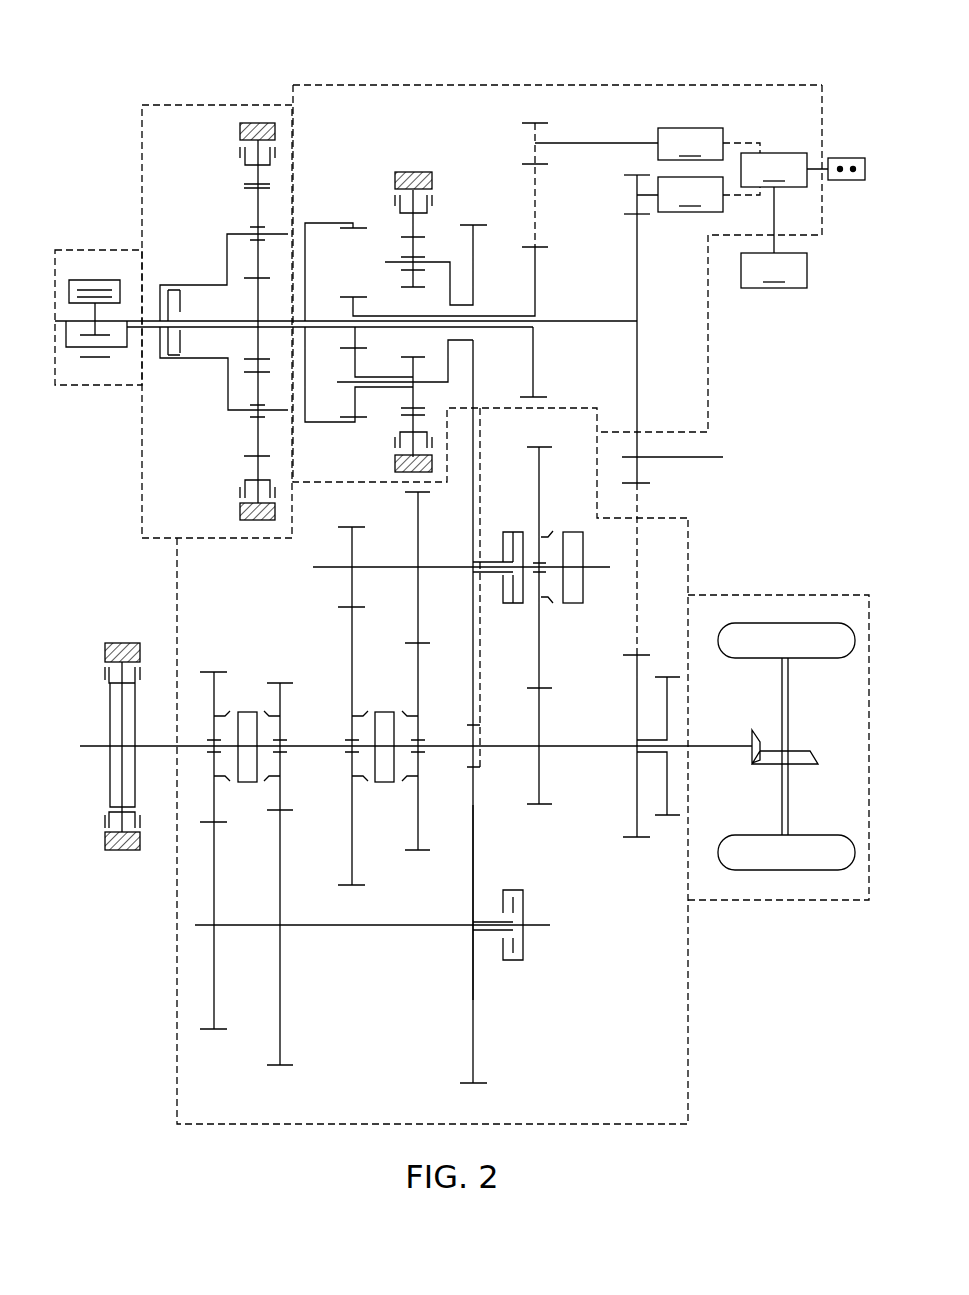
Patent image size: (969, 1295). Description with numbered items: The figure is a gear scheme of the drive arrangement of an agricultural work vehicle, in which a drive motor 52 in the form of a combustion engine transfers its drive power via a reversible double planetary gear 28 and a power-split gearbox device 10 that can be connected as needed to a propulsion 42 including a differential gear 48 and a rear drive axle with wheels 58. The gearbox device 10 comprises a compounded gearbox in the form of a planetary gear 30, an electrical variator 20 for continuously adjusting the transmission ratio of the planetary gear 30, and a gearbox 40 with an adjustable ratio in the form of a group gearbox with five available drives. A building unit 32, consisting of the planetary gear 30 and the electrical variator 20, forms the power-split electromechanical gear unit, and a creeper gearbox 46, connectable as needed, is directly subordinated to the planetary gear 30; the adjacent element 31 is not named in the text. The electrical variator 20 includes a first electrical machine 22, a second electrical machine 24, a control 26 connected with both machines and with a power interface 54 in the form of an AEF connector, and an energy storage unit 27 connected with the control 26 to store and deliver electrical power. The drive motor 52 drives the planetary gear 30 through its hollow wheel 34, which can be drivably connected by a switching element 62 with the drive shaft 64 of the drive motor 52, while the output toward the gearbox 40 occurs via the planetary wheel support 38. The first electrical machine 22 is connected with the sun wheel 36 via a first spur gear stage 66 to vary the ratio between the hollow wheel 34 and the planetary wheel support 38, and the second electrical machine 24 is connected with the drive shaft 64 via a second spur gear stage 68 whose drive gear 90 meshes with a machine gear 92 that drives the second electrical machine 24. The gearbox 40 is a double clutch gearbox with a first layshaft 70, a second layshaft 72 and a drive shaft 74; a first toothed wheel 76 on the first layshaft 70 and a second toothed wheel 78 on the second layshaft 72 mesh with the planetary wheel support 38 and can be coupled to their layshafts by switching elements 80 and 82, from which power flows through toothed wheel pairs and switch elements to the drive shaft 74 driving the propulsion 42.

The gearbox device 10 is at (374, 39).
The electrical variator 20 is at (772, 100).
The first electrical machine 22 is at (690, 144).
The second electrical machine 24 is at (690, 194).
The control 26 is at (774, 170).
The energy storage unit 27 is at (774, 270).
The reversible double planetary gear 28 is at (218, 103).
The planetary gear 30 is at (363, 173).
The generator 31 is at (442, 148).
The building unit 32 is at (580, 85).
The hollow wheel 34 is at (318, 422).
The sun wheel 36 is at (360, 297).
The planetary wheel support 38 is at (425, 382).
The gearbox 40 is at (177, 595).
The propulsion 42 is at (790, 595).
The creeper gearbox 46 is at (414, 140).
The differential gear 48 is at (806, 730).
The drive motor 52 is at (100, 248).
The power interface 54 is at (853, 180).
The wheels 58 is at (812, 658).
The switching element 62 is at (165, 358).
The drive shaft 64 is at (150, 320).
The first spur gear stage 66 is at (564, 214).
The second spur gear stage 68 is at (660, 252).
The first layshaft 70 is at (390, 567).
The second layshaft 72 is at (428, 927).
The drive shaft 74 is at (580, 746).
The first toothed wheel 76 is at (475, 485).
The second toothed wheel 78 is at (475, 852).
The switching element 80 is at (508, 603).
The switching element 82 is at (512, 962).
The drive gear 90 is at (633, 230).
The machine gear 92 is at (633, 185).